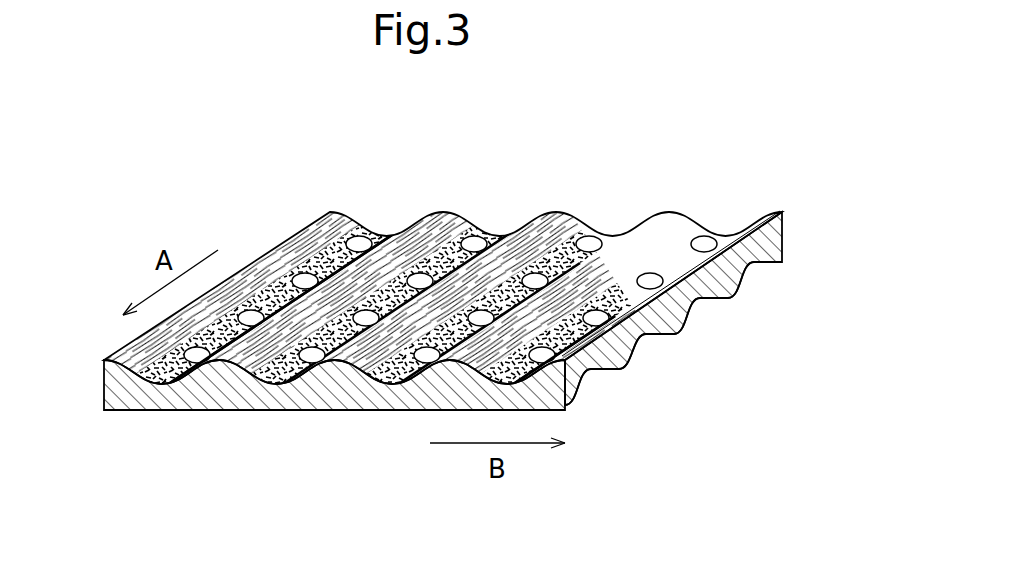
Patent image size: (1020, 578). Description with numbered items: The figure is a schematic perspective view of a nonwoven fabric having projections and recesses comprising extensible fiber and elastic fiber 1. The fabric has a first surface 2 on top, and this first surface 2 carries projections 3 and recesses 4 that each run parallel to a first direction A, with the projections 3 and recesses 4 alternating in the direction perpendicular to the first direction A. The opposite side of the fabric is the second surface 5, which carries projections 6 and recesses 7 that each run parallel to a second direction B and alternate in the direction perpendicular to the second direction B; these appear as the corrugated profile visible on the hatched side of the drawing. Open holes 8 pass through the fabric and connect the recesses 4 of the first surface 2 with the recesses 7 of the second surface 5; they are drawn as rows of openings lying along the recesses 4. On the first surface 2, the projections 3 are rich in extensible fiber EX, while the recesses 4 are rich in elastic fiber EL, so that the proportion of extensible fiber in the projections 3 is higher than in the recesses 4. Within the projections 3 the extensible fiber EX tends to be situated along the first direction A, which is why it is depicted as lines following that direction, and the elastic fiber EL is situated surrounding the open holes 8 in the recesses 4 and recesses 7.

The nonwoven fabric having projections and recesses comprising extensible fiber and 1 is at (190, 165).
The first surface 2 is at (738, 177).
The projections 3 is at (333, 372).
The recesses 4 is at (268, 395).
The second surface 5 is at (130, 428).
The projections 6 is at (730, 315).
The recesses 7 is at (645, 352).
The open holes 8 is at (588, 236).
The extensible fiber EX is at (422, 225).
The elastic fiber EL is at (700, 232).